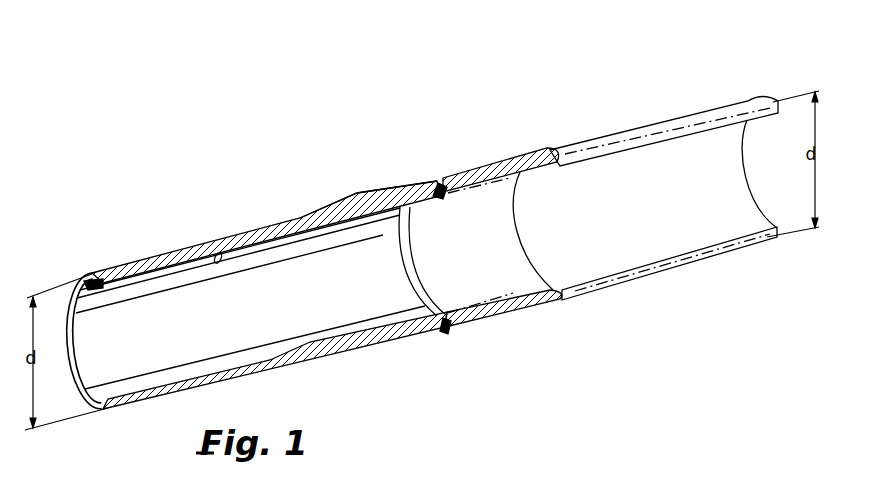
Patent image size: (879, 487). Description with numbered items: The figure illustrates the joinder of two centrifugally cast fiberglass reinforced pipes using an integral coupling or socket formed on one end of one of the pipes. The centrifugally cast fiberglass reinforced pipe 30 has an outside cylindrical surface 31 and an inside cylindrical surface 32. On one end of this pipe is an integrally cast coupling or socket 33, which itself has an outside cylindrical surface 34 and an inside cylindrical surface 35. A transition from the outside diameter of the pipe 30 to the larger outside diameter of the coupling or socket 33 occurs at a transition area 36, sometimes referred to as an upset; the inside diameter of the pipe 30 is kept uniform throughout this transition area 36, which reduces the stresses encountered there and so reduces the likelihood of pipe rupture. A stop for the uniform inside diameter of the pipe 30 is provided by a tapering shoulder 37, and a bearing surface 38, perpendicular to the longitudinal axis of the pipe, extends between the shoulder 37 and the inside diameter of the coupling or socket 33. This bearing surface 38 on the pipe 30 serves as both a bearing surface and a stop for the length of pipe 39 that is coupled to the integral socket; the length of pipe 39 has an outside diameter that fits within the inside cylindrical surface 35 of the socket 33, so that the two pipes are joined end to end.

The centrifugally cast fiberglass reinforced pipe 30 is at (128, 253).
The outside cylindrical surface 31 is at (170, 251).
The inside cylindrical surface 32 is at (215, 254).
The integrally cast coupling or socket 33 is at (470, 165).
The outside cylindrical surface of coupling 34 is at (521, 178).
The inside cylindrical surface of coupling 35 is at (493, 190).
The transition area 36 is at (333, 196).
The shoulder 37 is at (432, 211).
The bearing surface 38 is at (438, 186).
The length of pipe 39 is at (692, 115).